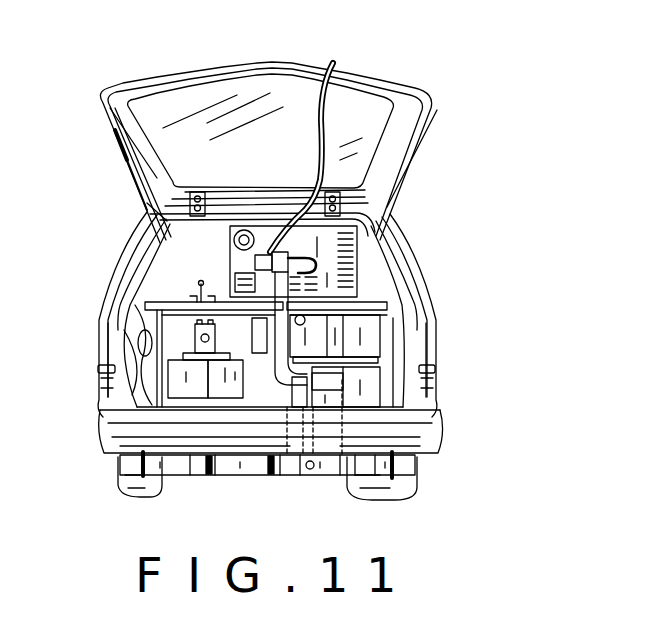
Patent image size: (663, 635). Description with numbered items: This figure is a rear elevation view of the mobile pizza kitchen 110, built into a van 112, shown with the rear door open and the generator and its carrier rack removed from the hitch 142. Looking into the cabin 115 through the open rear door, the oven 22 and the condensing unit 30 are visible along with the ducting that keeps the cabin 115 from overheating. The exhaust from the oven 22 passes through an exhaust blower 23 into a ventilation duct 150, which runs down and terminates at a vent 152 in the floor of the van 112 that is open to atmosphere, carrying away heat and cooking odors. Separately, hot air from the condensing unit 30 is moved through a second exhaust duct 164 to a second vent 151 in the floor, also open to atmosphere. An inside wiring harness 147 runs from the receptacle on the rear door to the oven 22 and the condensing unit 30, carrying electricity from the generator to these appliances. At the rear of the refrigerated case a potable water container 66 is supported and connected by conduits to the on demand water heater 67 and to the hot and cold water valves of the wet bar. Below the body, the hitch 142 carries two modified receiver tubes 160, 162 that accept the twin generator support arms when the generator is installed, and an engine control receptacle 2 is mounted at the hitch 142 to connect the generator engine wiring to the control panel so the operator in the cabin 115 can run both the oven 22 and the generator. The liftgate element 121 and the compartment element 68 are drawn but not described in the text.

The mobile pizza kitchen 110 is at (504, 127).
The van 112 is at (413, 265).
The cabin 115 is at (147, 212).
The liftgate 121 is at (429, 96).
The inside wiring harness 147 is at (318, 107).
The exhaust blower 23 is at (278, 257).
The oven 22 is at (323, 252).
The ventilation duct 150 is at (277, 290).
The condensing unit 30 is at (157, 315).
The on demand water heater 67 is at (200, 334).
The storage compartment 68 is at (190, 380).
The potable water container 66 is at (227, 380).
The second exhaust duct 164 is at (330, 390).
The second vent 151 is at (330, 455).
The hitch 142 is at (380, 467).
The vent 152 is at (297, 453).
The modified receiver tube 160 is at (200, 472).
The modified receiver tube 162 is at (418, 496).
The engine control receptacle 2 is at (310, 470).